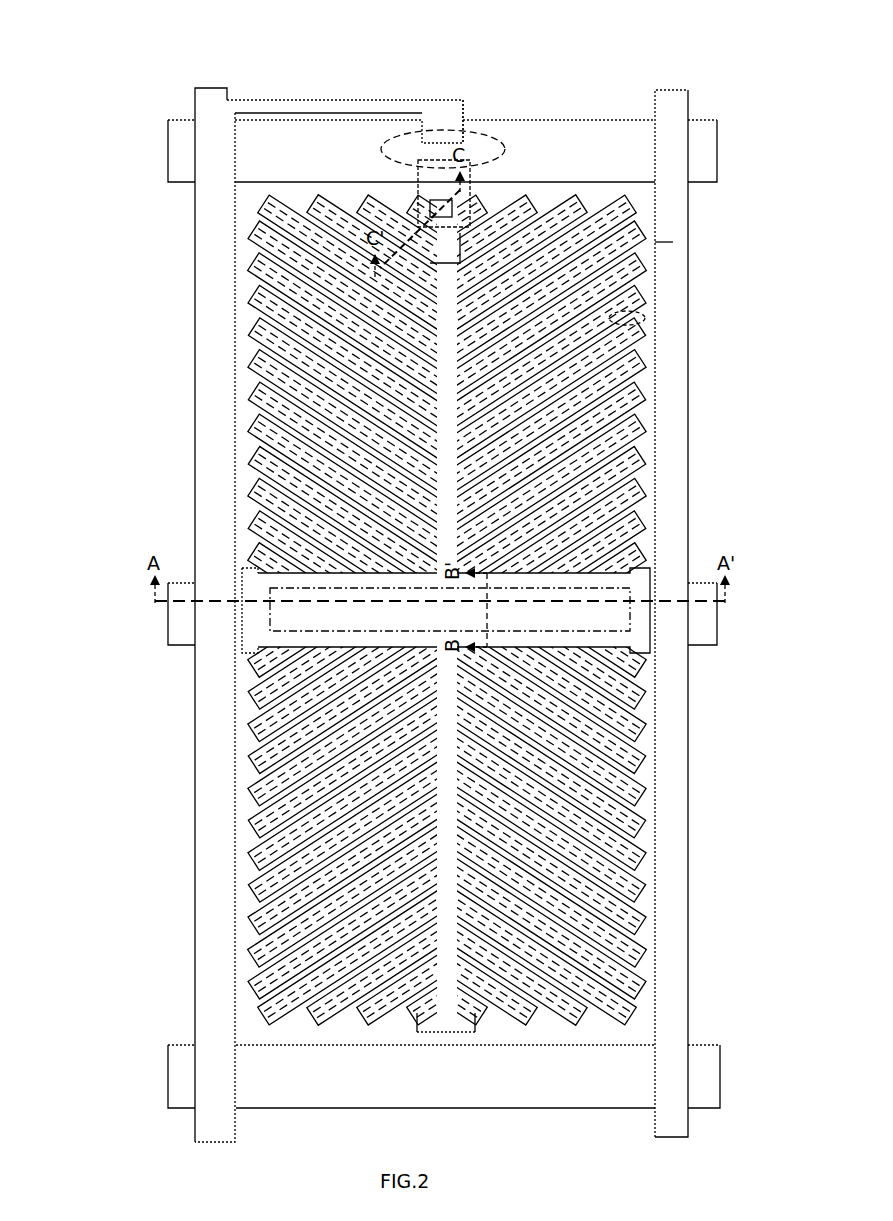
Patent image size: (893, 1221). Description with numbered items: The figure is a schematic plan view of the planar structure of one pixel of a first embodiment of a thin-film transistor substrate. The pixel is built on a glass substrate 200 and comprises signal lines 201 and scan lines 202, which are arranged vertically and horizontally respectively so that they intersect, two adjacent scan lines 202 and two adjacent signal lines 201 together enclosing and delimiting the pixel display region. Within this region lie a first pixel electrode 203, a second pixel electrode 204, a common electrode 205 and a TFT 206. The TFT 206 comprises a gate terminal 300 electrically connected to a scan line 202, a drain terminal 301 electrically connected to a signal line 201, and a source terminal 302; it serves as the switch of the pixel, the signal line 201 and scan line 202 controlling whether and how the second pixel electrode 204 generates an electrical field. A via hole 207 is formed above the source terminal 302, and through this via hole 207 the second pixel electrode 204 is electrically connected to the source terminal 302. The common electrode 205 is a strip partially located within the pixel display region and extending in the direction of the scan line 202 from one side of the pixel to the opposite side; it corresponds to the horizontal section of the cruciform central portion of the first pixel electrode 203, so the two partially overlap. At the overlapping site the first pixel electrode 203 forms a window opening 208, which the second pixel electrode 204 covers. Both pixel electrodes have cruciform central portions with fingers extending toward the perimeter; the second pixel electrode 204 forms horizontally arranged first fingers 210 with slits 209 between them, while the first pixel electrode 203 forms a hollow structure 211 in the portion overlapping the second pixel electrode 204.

The glass substrate 200 is at (446, 603).
The signal line 201 is at (198, 298).
The scan line 202 is at (188, 143).
The first pixel electrode 203 is at (673, 242).
The second pixel electrode 204 is at (258, 573).
The common electrode 205 is at (185, 615).
The TFT 206 is at (498, 143).
The via hole 207 is at (443, 213).
The window opening 208 is at (588, 605).
The slits 209 is at (240, 205).
The first fingers 210 is at (446, 610).
The hollow structure 211 is at (645, 318).
The gate terminal 300 is at (470, 137).
The drain terminal 301 is at (447, 130).
The source terminal 302 is at (440, 160).